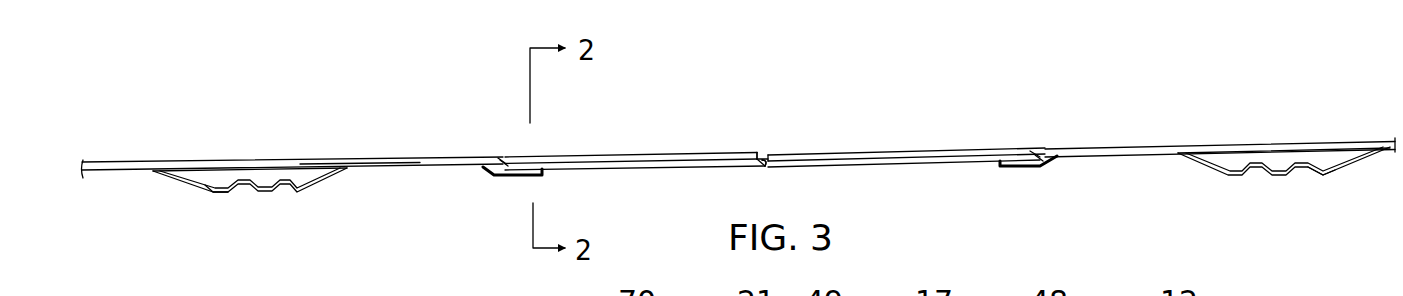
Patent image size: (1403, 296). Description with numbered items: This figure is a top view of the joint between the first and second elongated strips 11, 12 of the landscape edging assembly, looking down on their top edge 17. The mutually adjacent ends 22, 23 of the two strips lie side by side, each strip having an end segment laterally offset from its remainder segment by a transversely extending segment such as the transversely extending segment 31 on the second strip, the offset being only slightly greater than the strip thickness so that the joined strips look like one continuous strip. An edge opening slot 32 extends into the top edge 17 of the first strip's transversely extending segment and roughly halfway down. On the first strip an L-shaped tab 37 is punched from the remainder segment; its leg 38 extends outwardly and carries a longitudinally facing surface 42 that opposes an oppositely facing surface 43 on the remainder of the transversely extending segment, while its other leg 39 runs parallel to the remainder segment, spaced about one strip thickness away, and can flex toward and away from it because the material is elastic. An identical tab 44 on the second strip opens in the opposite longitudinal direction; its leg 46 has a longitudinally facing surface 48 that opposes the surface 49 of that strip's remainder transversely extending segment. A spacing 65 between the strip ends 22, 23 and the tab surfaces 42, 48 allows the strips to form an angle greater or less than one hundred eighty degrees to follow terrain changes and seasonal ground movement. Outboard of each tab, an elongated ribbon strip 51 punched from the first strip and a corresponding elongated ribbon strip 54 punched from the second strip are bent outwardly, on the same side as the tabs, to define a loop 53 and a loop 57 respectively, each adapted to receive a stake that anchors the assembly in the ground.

The first elongated strip 11 is at (364, 156).
The second elongated strip 12 is at (1103, 146).
The top edge 17 is at (413, 160).
The end of first strip 22 is at (914, 164).
The end of second strip 23 is at (637, 172).
The transversely extending segment 31 is at (771, 153).
The edge opening slot 32 is at (763, 156).
The tab 37 is at (498, 178).
The leg 38 is at (483, 170).
The leg 39 is at (520, 178).
The longitudinally facing surface 42 is at (500, 163).
The oppositely facing surface 43 is at (770, 167).
The tab 44 is at (1030, 173).
The leg 46 is at (1055, 168).
The longitudinally facing surface 48 is at (1035, 160).
The surface 49 is at (762, 168).
The elongated ribbon strip 51 is at (210, 193).
The loop 53 is at (219, 178).
The elongated ribbon strip 54 is at (1320, 178).
The loop 57 is at (1327, 157).
The spacing 65 is at (503, 162).